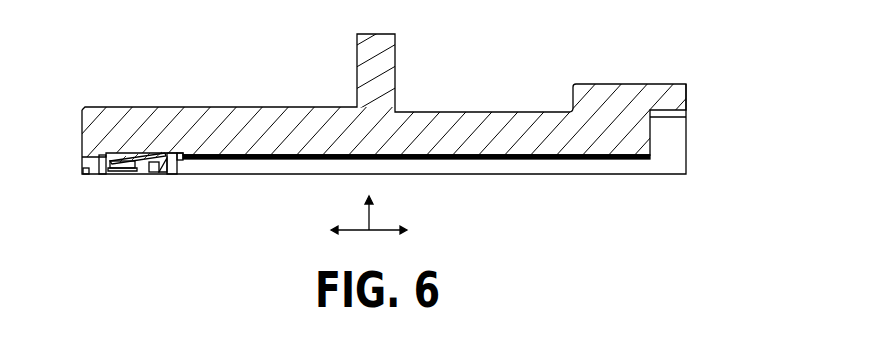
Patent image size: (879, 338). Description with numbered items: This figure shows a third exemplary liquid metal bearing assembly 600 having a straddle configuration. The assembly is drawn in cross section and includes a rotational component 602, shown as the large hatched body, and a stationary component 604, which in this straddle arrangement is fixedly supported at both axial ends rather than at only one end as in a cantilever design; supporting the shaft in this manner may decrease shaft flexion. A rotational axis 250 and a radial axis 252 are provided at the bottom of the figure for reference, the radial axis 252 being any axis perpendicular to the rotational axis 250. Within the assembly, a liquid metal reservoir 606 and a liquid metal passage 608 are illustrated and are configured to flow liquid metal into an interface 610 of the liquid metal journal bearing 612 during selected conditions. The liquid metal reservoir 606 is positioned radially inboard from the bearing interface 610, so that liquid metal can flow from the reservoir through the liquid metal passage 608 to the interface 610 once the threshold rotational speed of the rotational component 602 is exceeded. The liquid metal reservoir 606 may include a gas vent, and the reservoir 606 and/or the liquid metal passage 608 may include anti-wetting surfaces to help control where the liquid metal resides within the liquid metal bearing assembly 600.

The liquid metal bearing assembly 600 is at (400, 117).
The rotational component 602 is at (103, 115).
The stationary component 604 is at (220, 166).
The liquid metal reservoir 606 is at (124, 163).
The liquid metal passage 608 is at (157, 157).
The interface 610 is at (221, 146).
The liquid metal journal bearing 612 is at (274, 146).
The rotational axis 250 is at (389, 234).
The radial axis 252 is at (373, 214).